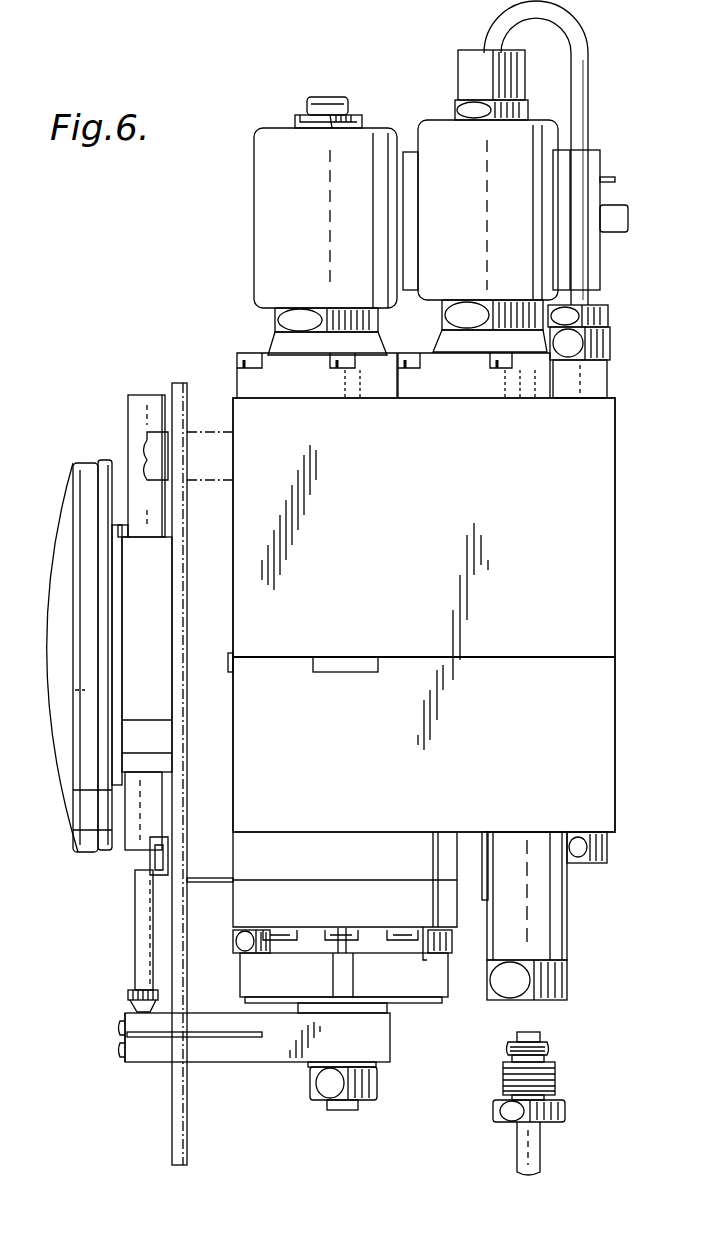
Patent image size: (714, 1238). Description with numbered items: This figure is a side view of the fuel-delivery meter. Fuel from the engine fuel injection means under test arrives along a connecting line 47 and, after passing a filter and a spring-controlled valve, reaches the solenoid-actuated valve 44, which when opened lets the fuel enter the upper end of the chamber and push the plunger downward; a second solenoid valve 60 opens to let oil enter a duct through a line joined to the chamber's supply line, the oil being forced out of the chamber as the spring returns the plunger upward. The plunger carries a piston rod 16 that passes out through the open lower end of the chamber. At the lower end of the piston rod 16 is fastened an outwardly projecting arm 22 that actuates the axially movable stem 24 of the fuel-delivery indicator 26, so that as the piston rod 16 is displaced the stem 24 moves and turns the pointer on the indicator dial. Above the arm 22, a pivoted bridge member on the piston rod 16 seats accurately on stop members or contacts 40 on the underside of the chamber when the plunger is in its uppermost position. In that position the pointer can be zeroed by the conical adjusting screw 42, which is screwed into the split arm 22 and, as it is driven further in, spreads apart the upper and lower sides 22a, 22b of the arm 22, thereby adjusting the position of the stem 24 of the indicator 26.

The solenoid valve 60 is at (283, 219).
The valve 44 is at (516, 160).
The fuel-delivery indicator 26 is at (68, 465).
The stem 24 is at (137, 932).
The upper side of the arm 22a is at (128, 1012).
The conical adjusting screw 42 is at (118, 1030).
The lower side of the arm 22b is at (143, 1062).
The arm 22 is at (237, 1062).
The piston rod 16 is at (393, 1012).
The stop members or contacts 40 is at (400, 935).
The connecting line 47 is at (520, 1146).